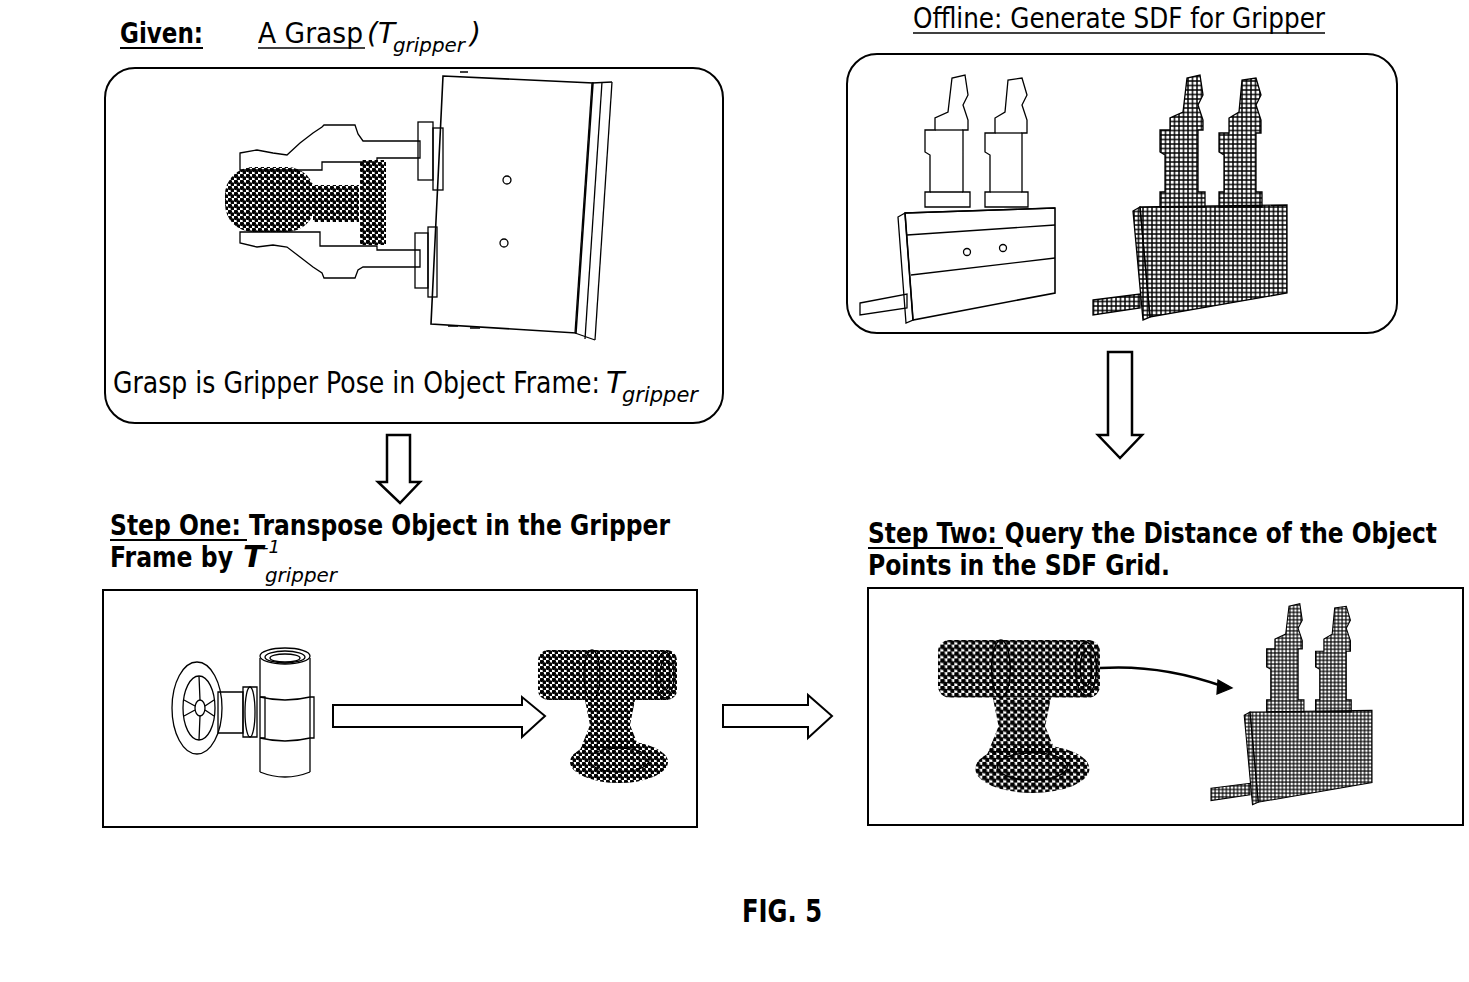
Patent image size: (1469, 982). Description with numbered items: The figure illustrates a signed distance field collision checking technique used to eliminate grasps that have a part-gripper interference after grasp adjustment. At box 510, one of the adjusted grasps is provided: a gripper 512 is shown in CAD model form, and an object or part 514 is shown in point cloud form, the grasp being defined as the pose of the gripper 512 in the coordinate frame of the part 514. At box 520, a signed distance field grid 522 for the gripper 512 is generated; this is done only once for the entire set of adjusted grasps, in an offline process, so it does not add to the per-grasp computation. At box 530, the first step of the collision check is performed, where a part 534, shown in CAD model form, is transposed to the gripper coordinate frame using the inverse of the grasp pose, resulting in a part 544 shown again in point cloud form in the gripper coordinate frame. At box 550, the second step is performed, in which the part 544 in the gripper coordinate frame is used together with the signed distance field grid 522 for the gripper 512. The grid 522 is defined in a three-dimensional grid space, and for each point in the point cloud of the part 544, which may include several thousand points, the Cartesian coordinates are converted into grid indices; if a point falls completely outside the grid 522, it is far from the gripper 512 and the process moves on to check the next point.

The box 510 is at (645, 68).
The gripper 512 is at (403, 290).
The object or part 514 is at (212, 209).
The box 520 is at (1340, 55).
The signed distance field grid 522 is at (1270, 206).
The box 530 is at (645, 590).
The part 534 is at (305, 656).
The part 544 is at (612, 657).
The box 550 is at (1400, 590).